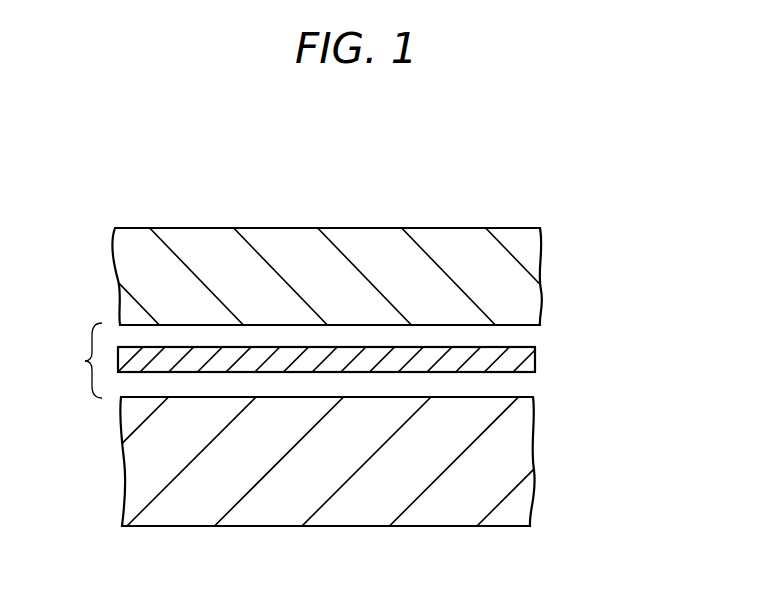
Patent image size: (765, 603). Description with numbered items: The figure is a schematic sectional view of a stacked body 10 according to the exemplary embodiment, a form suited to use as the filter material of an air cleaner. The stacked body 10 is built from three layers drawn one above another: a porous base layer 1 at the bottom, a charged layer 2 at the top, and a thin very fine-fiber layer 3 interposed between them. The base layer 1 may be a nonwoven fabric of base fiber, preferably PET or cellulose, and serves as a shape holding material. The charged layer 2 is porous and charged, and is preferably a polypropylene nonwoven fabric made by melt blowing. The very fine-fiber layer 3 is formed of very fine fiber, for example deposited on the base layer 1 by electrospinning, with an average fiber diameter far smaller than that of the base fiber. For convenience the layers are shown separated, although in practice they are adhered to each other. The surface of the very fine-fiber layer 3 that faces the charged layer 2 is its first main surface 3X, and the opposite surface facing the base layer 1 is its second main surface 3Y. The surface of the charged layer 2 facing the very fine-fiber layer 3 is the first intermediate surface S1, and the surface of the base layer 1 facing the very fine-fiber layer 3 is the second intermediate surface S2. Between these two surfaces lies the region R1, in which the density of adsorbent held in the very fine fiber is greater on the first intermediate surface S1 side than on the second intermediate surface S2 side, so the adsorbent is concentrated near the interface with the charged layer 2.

The stacked body 10 is at (412, 177).
The charged layer 2 is at (510, 280).
The very fine-fiber layer 3 is at (520, 357).
The first main surface 3X is at (497, 328).
The second main surface 3Y is at (497, 373).
The porous base layer 1 is at (518, 455).
The first intermediate surface S1 is at (158, 325).
The second intermediate surface S2 is at (158, 397).
The region R1 is at (72, 360).